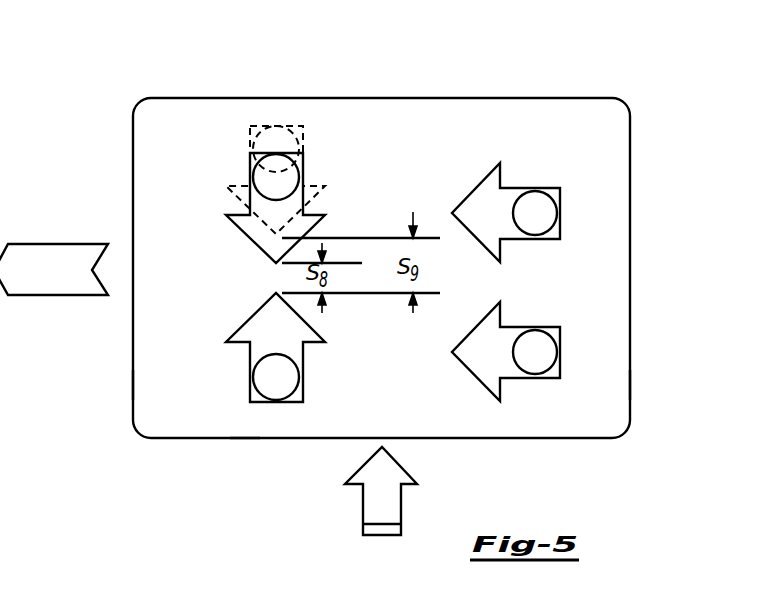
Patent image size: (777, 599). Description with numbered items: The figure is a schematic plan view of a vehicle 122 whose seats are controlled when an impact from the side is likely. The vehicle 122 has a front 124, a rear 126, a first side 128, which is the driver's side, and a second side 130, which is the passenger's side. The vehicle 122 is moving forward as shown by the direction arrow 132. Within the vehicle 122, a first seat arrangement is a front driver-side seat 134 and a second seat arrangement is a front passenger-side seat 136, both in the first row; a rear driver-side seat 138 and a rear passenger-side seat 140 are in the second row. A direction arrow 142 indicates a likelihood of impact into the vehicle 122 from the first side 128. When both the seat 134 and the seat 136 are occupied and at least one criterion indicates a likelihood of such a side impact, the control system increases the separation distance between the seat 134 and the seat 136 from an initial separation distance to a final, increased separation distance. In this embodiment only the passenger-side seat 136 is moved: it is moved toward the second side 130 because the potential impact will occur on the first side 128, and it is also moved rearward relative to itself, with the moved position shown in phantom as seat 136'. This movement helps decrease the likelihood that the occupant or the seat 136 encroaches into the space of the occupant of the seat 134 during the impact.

The vehicle 122 is at (572, 71).
The front 124 is at (133, 385).
The rear 126 is at (630, 385).
The first side 128 is at (246, 439).
The second side 130 is at (450, 98).
The direction arrow 132 is at (58, 244).
The front driver-side seat 134 is at (299, 377).
The front passenger-side seat 136 is at (256, 211).
The upper vertical actuator in retracted position 136' is at (306, 174).
The rear driver-side seat 138 is at (530, 374).
The rear passenger-side seat 140 is at (531, 191).
The direction arrow 142 is at (363, 508).